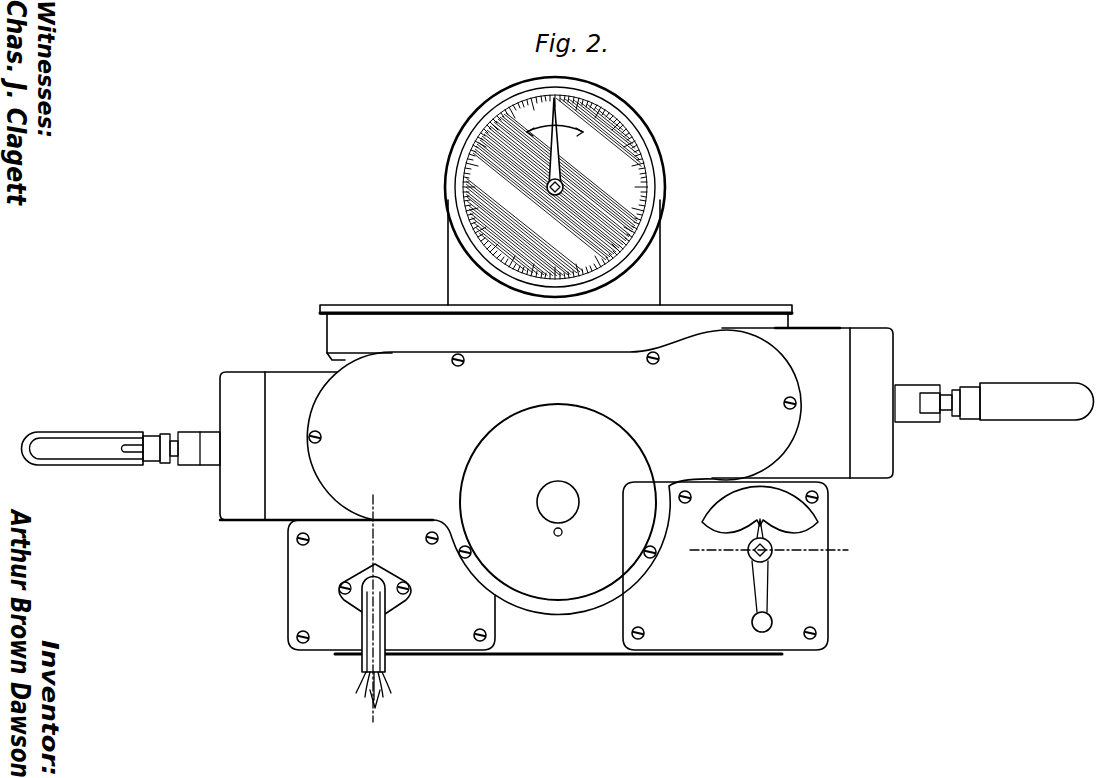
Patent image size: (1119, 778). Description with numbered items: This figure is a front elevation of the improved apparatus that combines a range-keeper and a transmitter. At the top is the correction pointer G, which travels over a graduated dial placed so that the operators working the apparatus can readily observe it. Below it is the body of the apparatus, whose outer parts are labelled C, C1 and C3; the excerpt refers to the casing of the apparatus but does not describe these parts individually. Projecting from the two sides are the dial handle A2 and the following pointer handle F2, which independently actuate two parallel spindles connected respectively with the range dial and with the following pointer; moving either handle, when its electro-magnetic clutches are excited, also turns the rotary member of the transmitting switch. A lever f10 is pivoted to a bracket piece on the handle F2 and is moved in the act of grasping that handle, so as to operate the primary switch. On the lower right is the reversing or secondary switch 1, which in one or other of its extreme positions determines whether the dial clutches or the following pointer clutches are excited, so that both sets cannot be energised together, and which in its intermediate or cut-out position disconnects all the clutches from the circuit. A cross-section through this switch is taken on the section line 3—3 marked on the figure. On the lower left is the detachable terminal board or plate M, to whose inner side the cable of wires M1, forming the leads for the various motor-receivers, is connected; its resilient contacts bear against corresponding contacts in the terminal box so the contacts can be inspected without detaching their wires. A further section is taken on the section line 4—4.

The casing C is at (556, 427).
The dial of indicator C1 is at (555, 187).
The correction pointer G is at (555, 146).
The hub cover disc C3 is at (532, 506).
The following pointer handle F2 is at (121, 436).
The lever f10 is at (93, 452).
The dial handle A2 is at (1018, 402).
The section line 3— 3 is at (767, 551).
The reversing or secondary switch 1 is at (757, 585).
The detachable terminal board or plate M is at (391, 585).
The cable of wires M1 is at (368, 624).
The section line 4— 4 is at (376, 609).